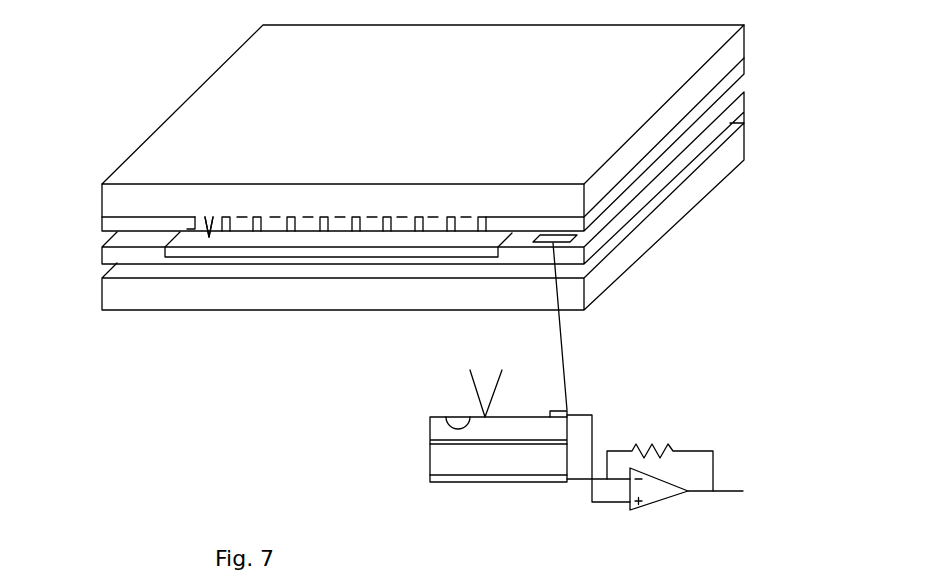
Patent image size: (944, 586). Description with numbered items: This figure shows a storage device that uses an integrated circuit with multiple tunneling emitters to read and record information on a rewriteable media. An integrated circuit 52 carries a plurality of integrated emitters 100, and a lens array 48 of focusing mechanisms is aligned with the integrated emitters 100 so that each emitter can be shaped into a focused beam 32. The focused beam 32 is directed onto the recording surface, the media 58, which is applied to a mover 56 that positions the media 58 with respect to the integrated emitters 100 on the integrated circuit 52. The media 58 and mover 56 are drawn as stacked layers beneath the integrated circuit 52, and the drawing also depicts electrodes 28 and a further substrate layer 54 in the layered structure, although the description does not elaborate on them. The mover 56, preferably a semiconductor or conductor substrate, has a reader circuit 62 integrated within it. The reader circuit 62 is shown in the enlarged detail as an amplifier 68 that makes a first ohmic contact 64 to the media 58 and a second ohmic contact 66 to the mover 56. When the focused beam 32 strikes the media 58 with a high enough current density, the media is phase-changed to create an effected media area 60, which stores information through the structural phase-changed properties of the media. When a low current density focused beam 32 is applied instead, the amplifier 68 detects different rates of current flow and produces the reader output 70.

The integrated emitter 100 is at (240, 216).
The electrodes 28 is at (486, 220).
The focused beam 32 is at (210, 240).
The integrated circuit 52 is at (744, 56).
The lens array 48 is at (744, 74).
The mover 56 is at (744, 110).
The bottom substrate 54 is at (744, 162).
The media 58 is at (437, 248).
The reader circuit 62 is at (580, 238).
The effected media area 60 is at (460, 415).
The first ohmic contact 64 is at (550, 411).
The second ohmic contact 66 is at (550, 483).
The amplifier 68 is at (682, 530).
The reader output 70 is at (727, 490).